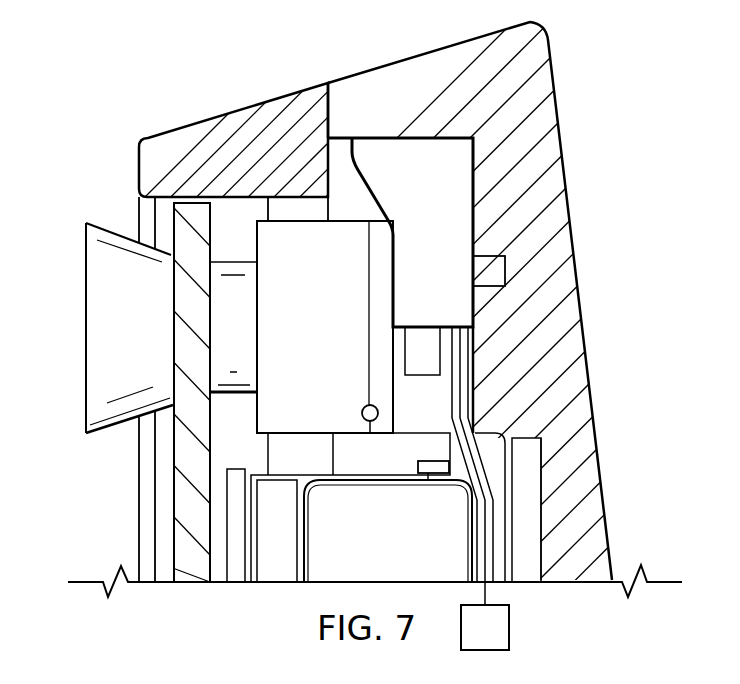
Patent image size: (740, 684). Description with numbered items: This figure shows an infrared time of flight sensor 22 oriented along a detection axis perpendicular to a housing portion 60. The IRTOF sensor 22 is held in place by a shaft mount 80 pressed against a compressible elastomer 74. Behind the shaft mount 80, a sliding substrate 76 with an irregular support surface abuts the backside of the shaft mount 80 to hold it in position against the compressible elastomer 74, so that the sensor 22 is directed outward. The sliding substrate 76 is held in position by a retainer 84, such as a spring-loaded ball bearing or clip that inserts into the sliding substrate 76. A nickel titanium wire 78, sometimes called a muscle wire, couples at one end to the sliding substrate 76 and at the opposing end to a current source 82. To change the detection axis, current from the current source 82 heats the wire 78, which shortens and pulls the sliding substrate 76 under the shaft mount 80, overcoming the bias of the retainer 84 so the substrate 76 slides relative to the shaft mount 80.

The infrared time of flight sensor 22 is at (82, 330).
The housing portion 60 is at (579, 292).
The compressible elastomer 74 is at (248, 329).
The sliding substrate 76 is at (440, 193).
The nickel titanium wire 78 is at (474, 538).
The shaft mount 80 is at (362, 410).
The current source 82 is at (509, 627).
The retainer 84 is at (480, 264).